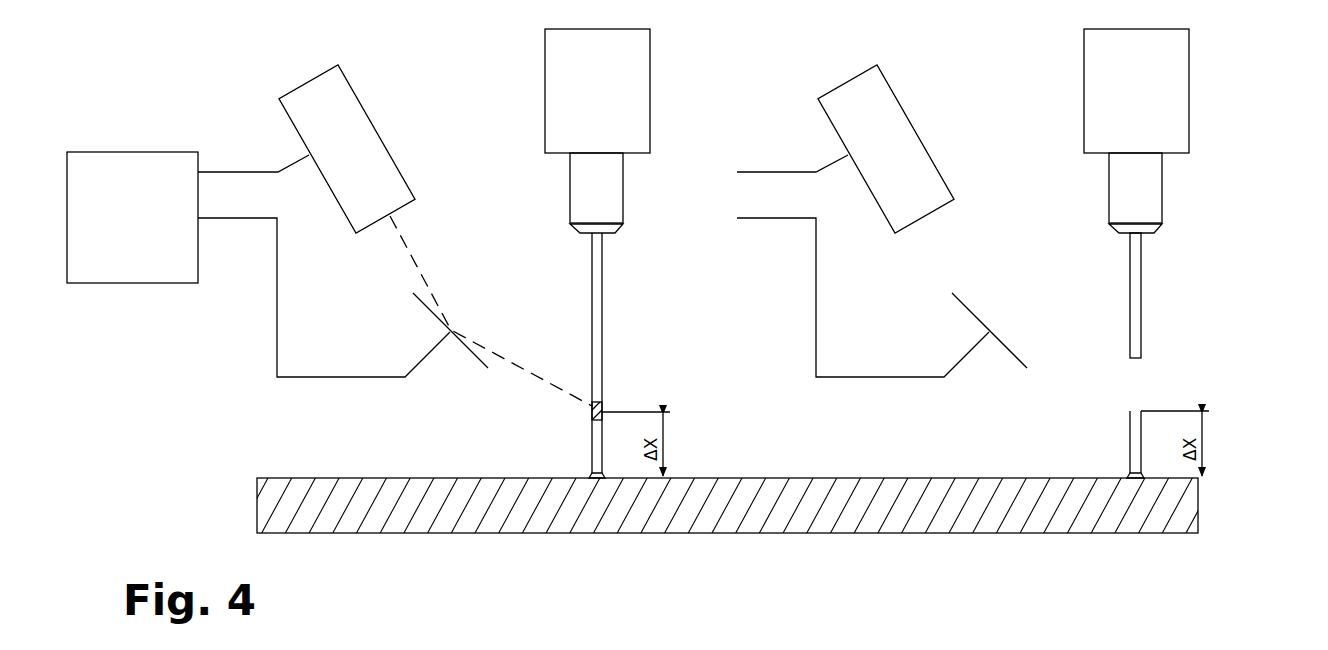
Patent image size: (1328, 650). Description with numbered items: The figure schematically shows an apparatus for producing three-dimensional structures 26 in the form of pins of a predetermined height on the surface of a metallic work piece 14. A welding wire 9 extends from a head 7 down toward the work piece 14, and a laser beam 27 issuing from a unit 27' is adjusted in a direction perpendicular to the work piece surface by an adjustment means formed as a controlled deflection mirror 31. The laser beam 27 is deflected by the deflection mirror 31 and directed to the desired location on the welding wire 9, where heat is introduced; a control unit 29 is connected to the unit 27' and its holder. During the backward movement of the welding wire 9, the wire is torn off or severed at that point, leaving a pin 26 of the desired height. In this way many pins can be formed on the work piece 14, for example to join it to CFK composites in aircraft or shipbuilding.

The dispensing head 7 is at (867, 131).
The welding wire 9 is at (604, 258).
The work piece 14 is at (1202, 503).
The three-dimensional structure 26 is at (1133, 440).
The laser beam 27 is at (491, 311).
The light source / sensor 27' is at (616, 149).
The control unit 29 is at (132, 217).
The deflection mirror 31 is at (459, 340).